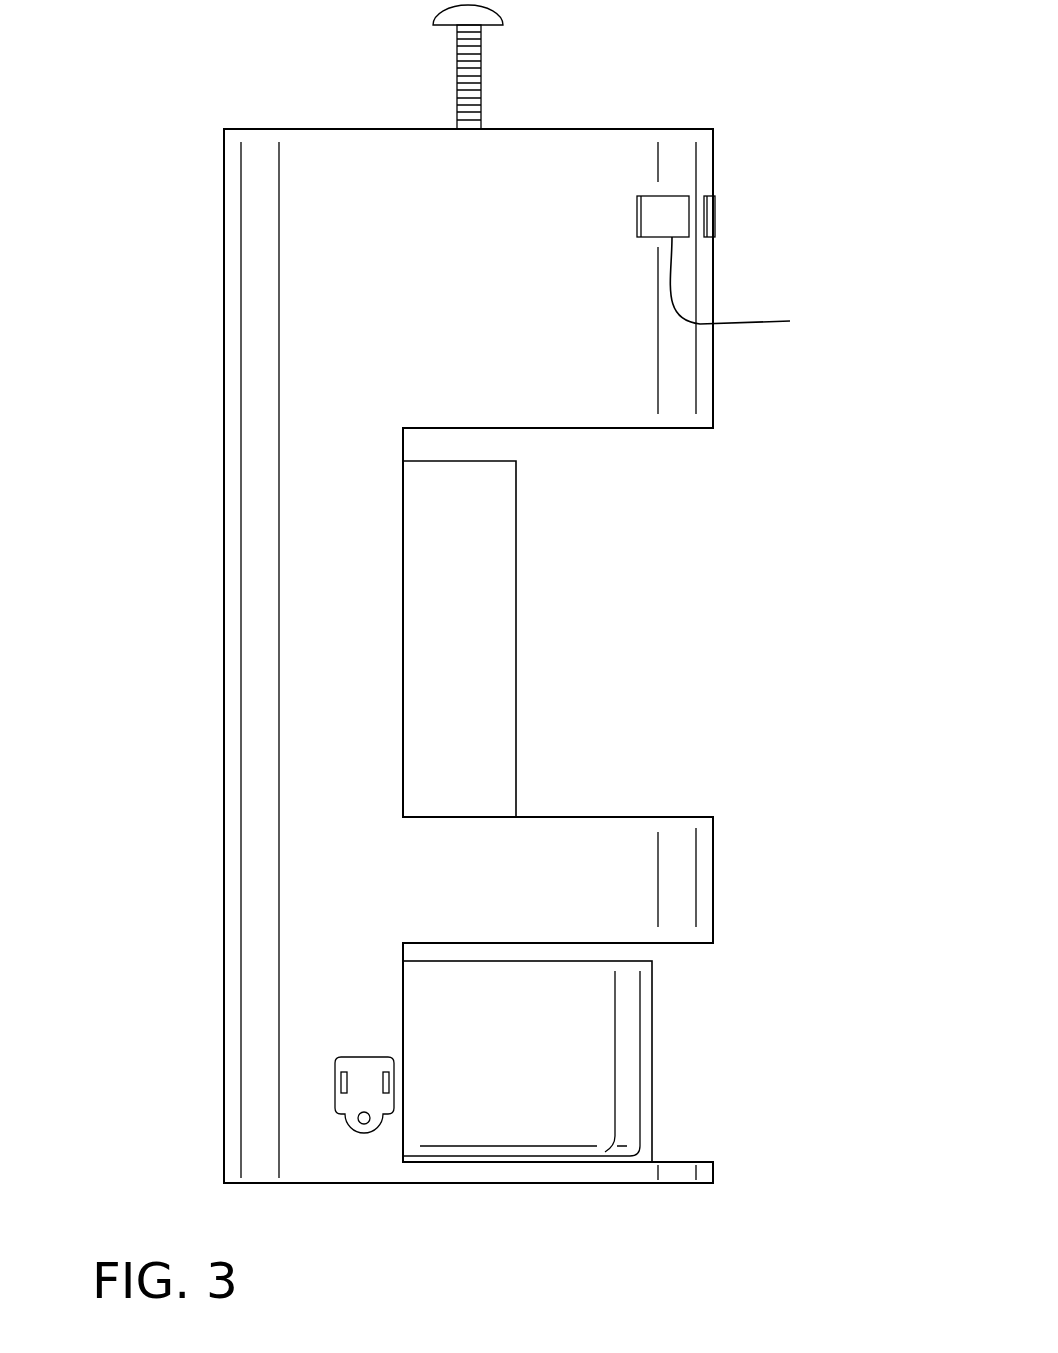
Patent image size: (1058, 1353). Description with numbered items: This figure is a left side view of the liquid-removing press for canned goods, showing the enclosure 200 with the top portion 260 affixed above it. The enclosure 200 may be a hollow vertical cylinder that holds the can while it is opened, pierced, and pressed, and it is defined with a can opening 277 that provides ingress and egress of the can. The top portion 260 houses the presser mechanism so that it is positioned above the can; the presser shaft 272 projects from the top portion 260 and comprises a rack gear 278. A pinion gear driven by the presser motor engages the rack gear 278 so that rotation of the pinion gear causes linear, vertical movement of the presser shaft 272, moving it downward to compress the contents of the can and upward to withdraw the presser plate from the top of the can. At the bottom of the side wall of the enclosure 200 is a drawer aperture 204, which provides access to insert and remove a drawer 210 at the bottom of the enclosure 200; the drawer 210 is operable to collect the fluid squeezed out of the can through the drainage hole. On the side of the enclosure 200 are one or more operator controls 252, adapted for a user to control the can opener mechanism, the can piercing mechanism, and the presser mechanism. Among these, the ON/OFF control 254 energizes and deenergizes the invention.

The enclosure 200 is at (226, 510).
The drawer aperture 204 is at (695, 1012).
The drawer 210 is at (640, 1070).
The operator controls 252 is at (727, 173).
The ON/OFF control 254 is at (769, 289).
The top portion 260 is at (203, 130).
The presser shaft 272 is at (551, 67).
The can opening 277 is at (590, 516).
The rack gear 278 is at (473, 90).